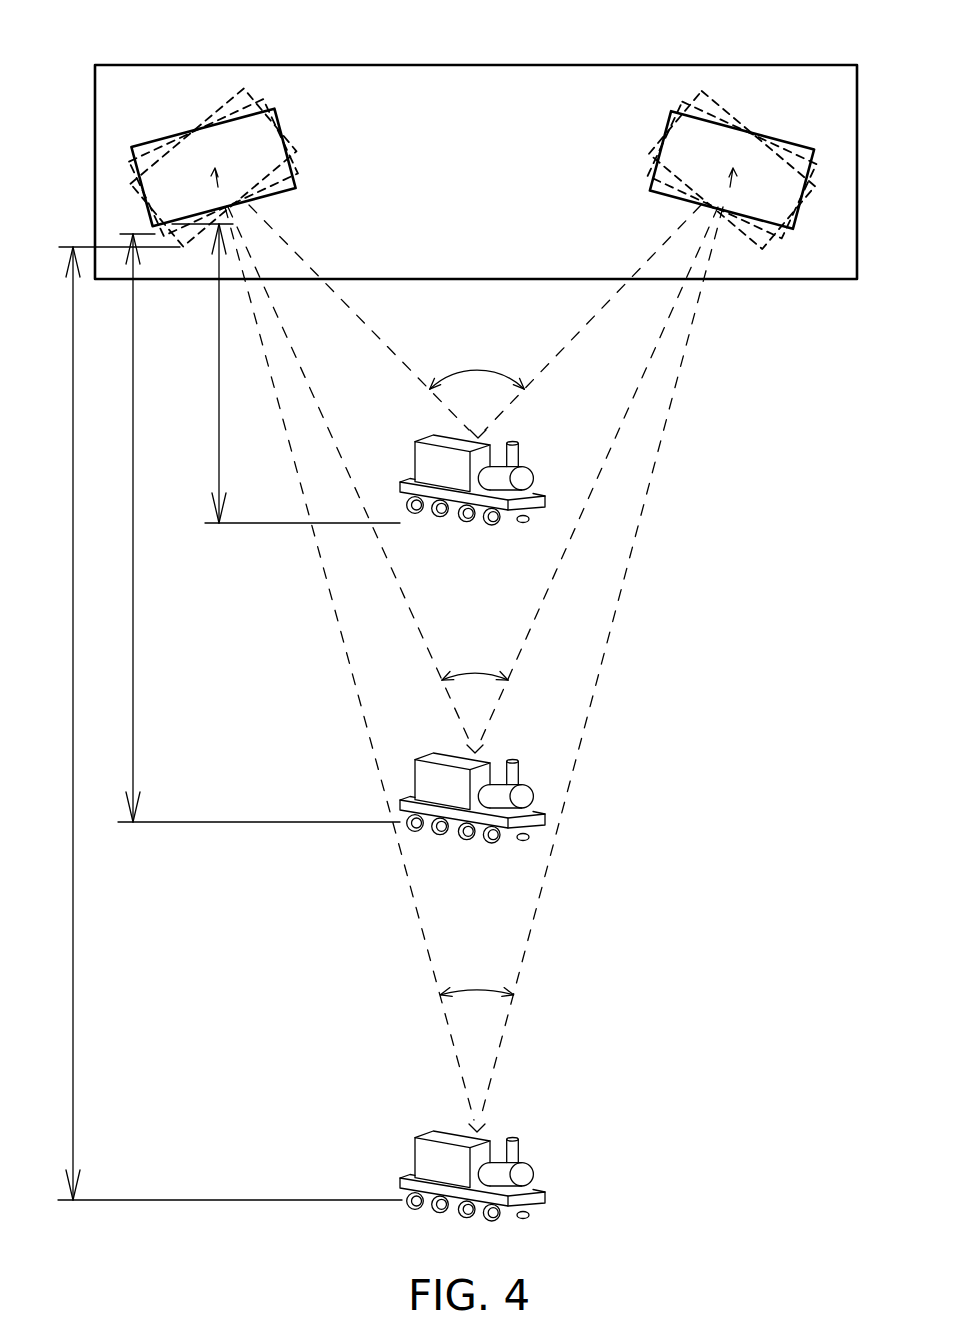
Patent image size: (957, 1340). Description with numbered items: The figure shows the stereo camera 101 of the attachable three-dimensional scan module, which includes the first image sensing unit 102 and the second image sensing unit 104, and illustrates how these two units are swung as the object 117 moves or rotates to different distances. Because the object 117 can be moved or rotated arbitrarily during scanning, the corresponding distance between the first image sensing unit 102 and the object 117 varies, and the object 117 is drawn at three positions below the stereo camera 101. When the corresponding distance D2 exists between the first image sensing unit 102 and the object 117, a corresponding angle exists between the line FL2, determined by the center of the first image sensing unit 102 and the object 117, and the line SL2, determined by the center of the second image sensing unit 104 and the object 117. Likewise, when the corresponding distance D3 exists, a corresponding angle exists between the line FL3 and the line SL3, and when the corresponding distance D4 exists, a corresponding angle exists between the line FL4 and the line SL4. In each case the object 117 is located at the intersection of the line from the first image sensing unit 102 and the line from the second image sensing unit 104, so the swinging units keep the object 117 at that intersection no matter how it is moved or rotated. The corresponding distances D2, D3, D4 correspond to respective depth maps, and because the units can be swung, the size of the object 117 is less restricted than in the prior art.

The stereo camera 101 is at (473, 65).
The first image sensing unit 102 is at (177, 132).
The second image sensing unit 104 is at (772, 133).
The object 117 is at (527, 458).
The line FL2 is at (330, 603).
The line FL3 is at (322, 417).
The line FL4 is at (353, 318).
The line SL2 is at (610, 633).
The line SL3 is at (637, 390).
The line SL4 is at (565, 345).
The corresponding distance D2 is at (219, 723).
The corresponding distance D3 is at (247, 528).
The corresponding distance D4 is at (286, 373).